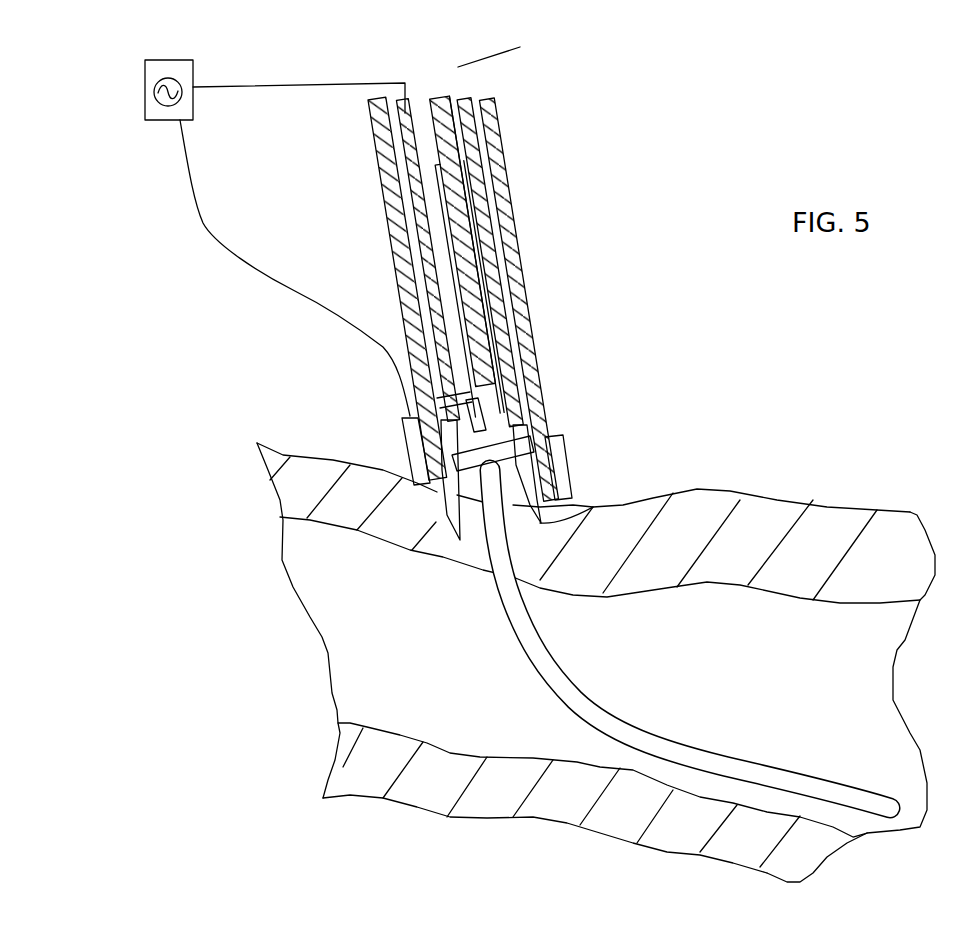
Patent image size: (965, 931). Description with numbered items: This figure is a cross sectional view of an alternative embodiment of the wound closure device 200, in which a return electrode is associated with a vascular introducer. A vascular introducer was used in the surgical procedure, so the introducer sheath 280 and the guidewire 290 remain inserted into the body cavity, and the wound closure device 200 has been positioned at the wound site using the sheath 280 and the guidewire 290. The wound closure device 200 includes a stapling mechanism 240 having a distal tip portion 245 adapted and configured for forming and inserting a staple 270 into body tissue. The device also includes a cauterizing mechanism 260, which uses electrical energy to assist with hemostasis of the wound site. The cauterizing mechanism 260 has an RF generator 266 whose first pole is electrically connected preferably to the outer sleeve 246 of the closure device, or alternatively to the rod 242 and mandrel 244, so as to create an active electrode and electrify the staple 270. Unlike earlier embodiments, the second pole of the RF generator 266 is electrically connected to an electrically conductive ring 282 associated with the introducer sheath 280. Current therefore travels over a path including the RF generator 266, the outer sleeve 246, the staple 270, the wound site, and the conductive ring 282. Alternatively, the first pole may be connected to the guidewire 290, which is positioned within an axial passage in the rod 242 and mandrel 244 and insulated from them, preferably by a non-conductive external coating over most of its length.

The wound closure device 200 is at (592, 208).
The stapling mechanism 240 is at (503, 343).
The rod 242 is at (445, 160).
The mandrel 244 is at (513, 427).
The distal tip portion 245 is at (543, 437).
The outer sleeve 246 is at (403, 263).
The cauterizing mechanism 260 is at (142, 97).
The RF generator 266 is at (197, 68).
The staple 270 is at (580, 503).
The introducer sheath 280 is at (503, 218).
The electrically conductive ring 282 is at (400, 442).
The guidewire 290 is at (711, 753).